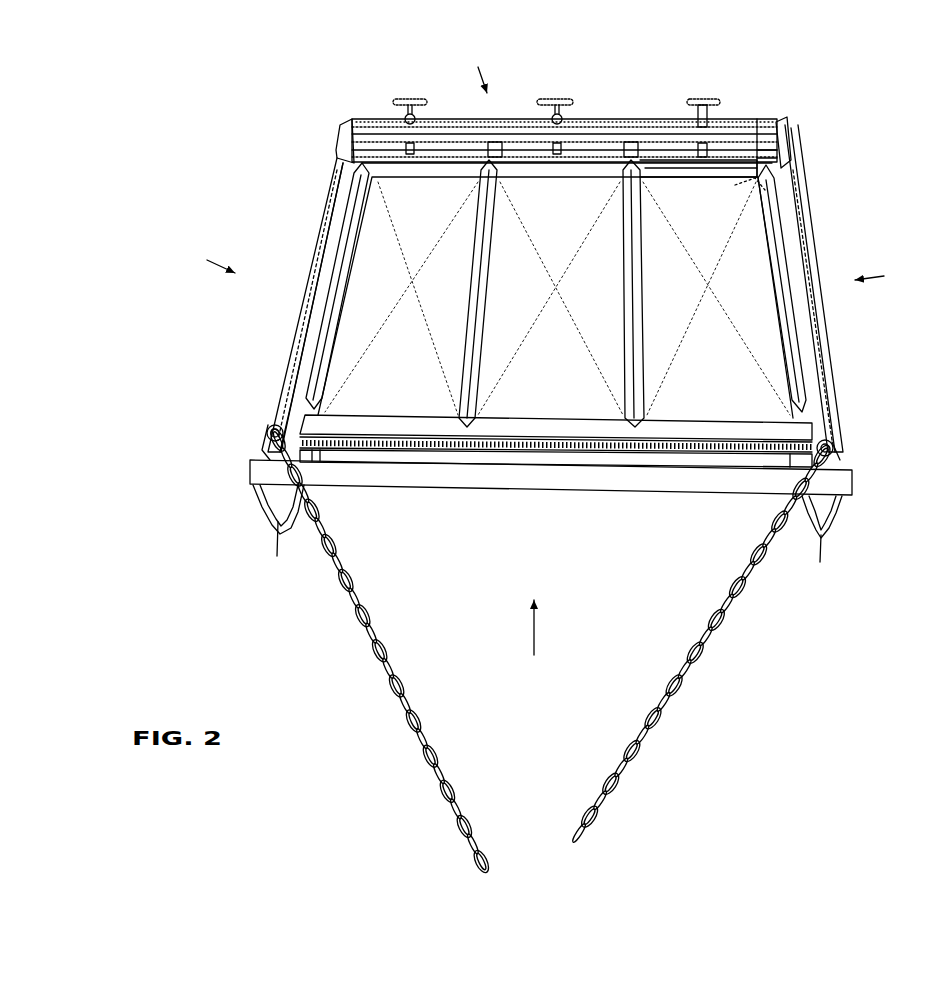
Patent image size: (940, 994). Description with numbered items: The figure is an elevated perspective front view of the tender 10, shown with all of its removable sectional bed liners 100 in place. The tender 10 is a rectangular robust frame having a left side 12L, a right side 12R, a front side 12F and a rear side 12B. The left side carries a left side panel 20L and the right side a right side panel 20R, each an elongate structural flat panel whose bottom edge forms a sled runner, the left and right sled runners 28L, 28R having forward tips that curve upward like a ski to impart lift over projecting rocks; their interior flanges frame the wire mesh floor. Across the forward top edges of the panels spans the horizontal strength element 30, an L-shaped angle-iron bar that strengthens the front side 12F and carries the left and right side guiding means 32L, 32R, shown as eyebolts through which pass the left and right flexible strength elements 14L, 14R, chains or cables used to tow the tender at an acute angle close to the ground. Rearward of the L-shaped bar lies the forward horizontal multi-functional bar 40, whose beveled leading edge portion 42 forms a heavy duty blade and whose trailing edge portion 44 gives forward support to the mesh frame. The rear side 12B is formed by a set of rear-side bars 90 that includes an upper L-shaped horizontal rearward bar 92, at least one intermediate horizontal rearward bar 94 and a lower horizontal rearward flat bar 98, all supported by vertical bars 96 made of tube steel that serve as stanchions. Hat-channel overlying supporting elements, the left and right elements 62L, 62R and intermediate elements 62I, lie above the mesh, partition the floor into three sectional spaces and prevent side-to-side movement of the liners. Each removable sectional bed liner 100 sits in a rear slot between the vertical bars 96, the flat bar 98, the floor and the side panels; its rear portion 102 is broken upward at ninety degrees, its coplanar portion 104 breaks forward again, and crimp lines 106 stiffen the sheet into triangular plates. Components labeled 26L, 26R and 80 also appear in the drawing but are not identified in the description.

The tender 10 is at (185, 167).
The right side 12R is at (197, 257).
The left side 12L is at (890, 276).
The rear side 12B is at (480, 68).
The front side 12F is at (531, 645).
The right flexible strength element 14R is at (352, 597).
The left flexible strength element 14L is at (712, 642).
The right side panel 20R is at (320, 228).
The left side panel 20L is at (805, 282).
The right hook 26R is at (263, 500).
The left hook 26L is at (838, 507).
The right sled runner 28R is at (278, 556).
The left sled runner 28L is at (820, 562).
The horizontal strength element 30 is at (540, 489).
The right side guiding means 32R is at (268, 436).
The left side guiding means 32L is at (834, 448).
The forward horizontal multi-functional bar 40 is at (372, 425).
The leading edge portion 42 is at (458, 448).
The trailing edge portion 44 is at (588, 425).
The right overlying supporting element 62R is at (347, 252).
The left overlying supporting element 62L is at (782, 273).
The intermediate overlying supporting element 62I is at (478, 237).
The fastener 80 is at (408, 115).
The set of rear-side bars 90 is at (537, 144).
The upper L shaped horizontal rearward bar 92 is at (368, 128).
The intermediate horizontal rearward bar 94 is at (766, 145).
The vertical bar 96 is at (492, 146).
The lower horizontal rearward flat bar 98 is at (763, 156).
The removable sectional bed liner 100 is at (580, 353).
The rear portion 102 is at (707, 166).
The coplanar portion 104 is at (728, 165).
The crimp lines 106 is at (735, 232).